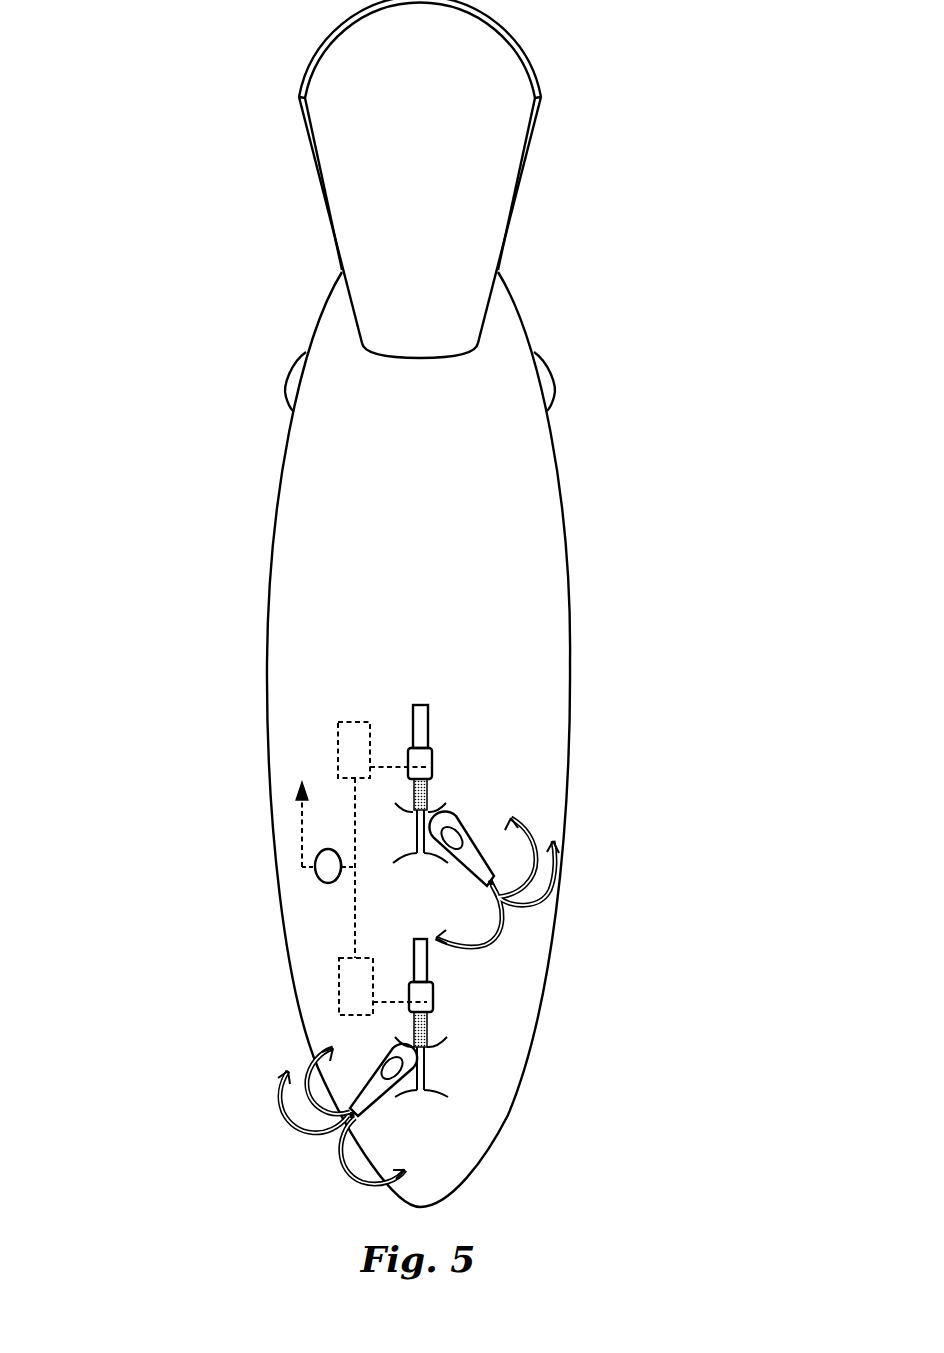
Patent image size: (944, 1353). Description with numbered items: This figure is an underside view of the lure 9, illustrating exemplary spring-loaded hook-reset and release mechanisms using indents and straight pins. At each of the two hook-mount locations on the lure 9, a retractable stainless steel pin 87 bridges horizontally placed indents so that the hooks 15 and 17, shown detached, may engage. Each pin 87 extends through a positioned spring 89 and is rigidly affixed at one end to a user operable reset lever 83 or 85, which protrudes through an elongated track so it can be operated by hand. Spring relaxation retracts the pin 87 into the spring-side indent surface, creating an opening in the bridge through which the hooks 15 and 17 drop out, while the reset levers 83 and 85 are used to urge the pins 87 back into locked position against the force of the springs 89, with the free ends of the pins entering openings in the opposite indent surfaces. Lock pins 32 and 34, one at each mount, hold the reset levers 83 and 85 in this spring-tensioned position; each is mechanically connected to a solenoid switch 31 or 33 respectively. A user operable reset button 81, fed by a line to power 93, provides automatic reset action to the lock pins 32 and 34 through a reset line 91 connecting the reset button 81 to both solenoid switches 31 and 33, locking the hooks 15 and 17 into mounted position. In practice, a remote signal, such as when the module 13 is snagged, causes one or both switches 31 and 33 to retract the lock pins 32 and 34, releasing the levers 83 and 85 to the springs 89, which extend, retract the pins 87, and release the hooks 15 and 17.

The lure 9 is at (655, 552).
The module 13 is at (513, 1115).
The hook 15 is at (342, 1112).
The hook 17 is at (553, 903).
The solenoid switch 31 is at (338, 745).
The lock pin 32 is at (385, 765).
The solenoid switch 33 is at (339, 1007).
The lock pin 34 is at (383, 1000).
The reset button 81 is at (316, 872).
The reset lever 83 is at (432, 768).
The reset lever 85 is at (433, 995).
The pin 87 is at (430, 1065).
The spring 89 is at (430, 797).
The reset line 91 is at (355, 948).
The line to power 93 is at (300, 842).